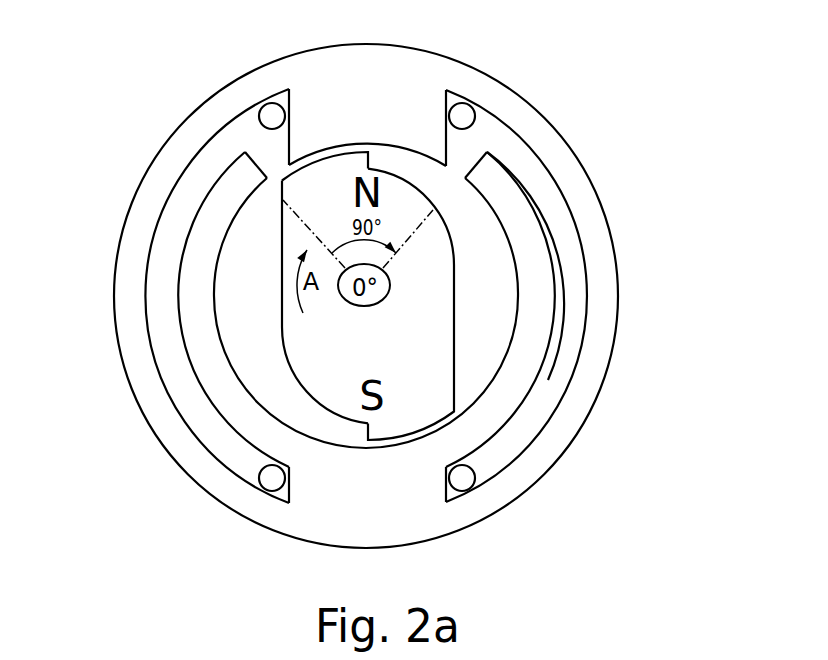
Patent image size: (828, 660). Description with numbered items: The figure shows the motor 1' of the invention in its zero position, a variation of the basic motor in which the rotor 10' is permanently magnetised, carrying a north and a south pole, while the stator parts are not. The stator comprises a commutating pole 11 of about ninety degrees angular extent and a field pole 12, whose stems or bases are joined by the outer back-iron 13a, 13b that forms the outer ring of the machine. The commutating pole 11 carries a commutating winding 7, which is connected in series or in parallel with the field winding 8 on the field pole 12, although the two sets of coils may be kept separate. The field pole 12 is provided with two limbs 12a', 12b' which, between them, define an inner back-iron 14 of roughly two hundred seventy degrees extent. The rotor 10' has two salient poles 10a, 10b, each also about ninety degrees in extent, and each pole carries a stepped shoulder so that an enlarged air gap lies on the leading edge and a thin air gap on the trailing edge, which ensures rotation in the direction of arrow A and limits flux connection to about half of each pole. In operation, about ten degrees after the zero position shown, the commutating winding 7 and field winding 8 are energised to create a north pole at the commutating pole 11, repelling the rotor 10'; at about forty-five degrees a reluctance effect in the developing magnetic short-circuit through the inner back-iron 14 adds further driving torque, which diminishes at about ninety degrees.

The motor 1' is at (350, 293).
The commutating winding 7 is at (475, 108).
The field winding 8 is at (475, 478).
The rotor 10' is at (493, 296).
The first salient pole of the rotor 10a is at (427, 203).
The second salient pole of the rotor 10b is at (392, 423).
The commutating pole 11 is at (415, 115).
The field pole 12 is at (348, 492).
The first limb of the field pole 12a' is at (172, 309).
The second limb of the field pole 12b' is at (564, 309).
The outer back-iron 13a is at (187, 455).
The outer back-iron 13b is at (578, 433).
The inner back-iron 14 is at (527, 408).